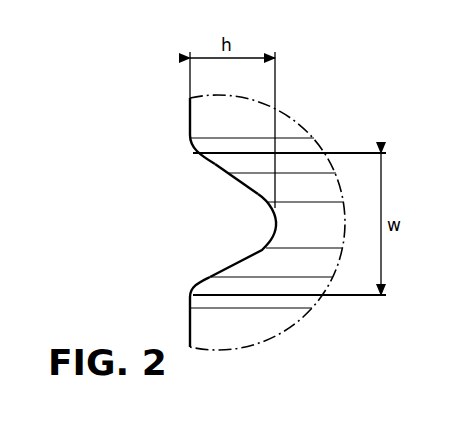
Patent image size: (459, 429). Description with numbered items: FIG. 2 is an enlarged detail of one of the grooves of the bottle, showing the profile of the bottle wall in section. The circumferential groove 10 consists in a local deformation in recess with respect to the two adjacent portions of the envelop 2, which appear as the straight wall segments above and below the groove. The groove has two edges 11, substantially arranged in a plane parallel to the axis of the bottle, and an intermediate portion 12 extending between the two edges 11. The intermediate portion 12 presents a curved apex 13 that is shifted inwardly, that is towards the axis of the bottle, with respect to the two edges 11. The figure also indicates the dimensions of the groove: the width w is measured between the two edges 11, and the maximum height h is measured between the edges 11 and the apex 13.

The envelop 2 is at (228, 209).
The circumferential groove 10 is at (122, 213).
The edges 11 is at (188, 156).
The intermediate portion 12 is at (233, 183).
The curved apex 13 is at (271, 225).